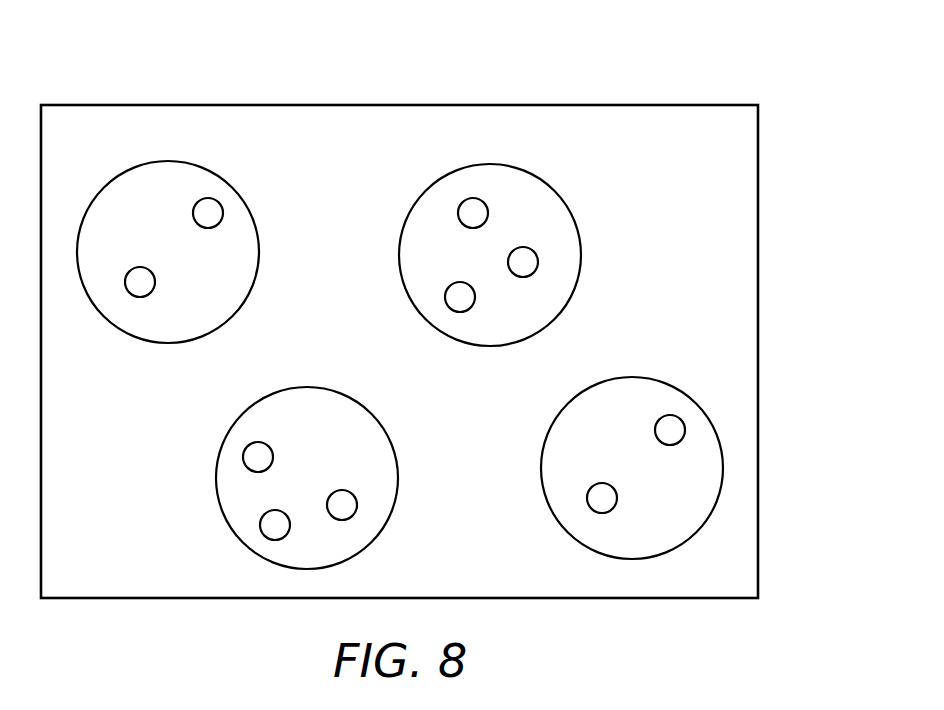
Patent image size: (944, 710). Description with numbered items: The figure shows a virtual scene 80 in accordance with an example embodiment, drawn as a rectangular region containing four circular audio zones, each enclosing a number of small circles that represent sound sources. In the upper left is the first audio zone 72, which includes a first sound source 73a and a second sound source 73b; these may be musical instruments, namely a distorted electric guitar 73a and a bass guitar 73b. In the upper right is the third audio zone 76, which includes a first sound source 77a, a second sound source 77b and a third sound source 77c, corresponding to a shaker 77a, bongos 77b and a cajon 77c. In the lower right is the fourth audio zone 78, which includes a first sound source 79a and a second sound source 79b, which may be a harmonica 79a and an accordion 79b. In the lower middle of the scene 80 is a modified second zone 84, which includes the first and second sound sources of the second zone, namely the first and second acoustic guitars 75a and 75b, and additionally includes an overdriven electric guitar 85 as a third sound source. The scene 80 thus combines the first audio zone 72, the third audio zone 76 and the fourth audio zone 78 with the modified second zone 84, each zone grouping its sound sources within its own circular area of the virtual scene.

The virtual scene 80 is at (707, 88).
The first audio zone 72 is at (227, 181).
The first sound source of the first audio zone 73a is at (155, 282).
The second sound source of the first audio zone 73b is at (193, 213).
The third audio zone 76 is at (547, 186).
The first sound source of the third audio zone 77a is at (445, 293).
The second sound source of the third audio zone 77b is at (459, 203).
The third sound source of the third audio zone 77c is at (538, 262).
The modified second zone 84 is at (367, 406).
The first sound source of the second audio zone 75a is at (243, 457).
The second sound source of the second audio zone 75b is at (342, 490).
The overdriven electric guitar 85 is at (260, 523).
The fourth audio zone 78 is at (675, 389).
The first sound source of the fourth audio zone 79a is at (602, 483).
The second sound source of the fourth audio zone 79b is at (670, 445).